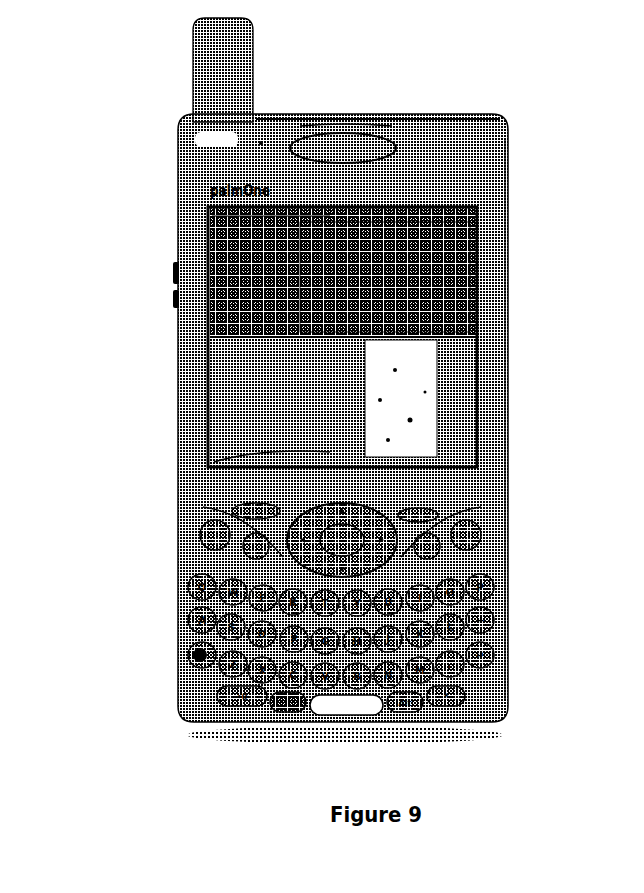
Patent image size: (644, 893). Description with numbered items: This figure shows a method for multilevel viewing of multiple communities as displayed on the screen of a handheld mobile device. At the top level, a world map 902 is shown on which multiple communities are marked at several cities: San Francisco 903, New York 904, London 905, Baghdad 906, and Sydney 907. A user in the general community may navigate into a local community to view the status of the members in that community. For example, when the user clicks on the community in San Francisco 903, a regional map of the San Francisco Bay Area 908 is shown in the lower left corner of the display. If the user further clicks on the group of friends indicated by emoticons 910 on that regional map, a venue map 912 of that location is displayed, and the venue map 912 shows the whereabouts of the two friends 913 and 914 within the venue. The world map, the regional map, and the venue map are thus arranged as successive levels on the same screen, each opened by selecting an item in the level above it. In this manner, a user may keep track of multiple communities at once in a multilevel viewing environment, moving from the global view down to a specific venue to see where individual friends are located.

The world map 902 is at (206, 223).
The San Francisco community 903 is at (236, 258).
The New York community 904 is at (275, 250).
The London community 905 is at (348, 257).
The Baghdad community 906 is at (392, 112).
The Sydney community 907 is at (415, 265).
The regional map of the San Francisco Bay Area 908 is at (206, 350).
The emoticons 910 is at (305, 456).
The venue map 912 is at (478, 452).
The friend 913 is at (480, 333).
The friend 914 is at (510, 373).